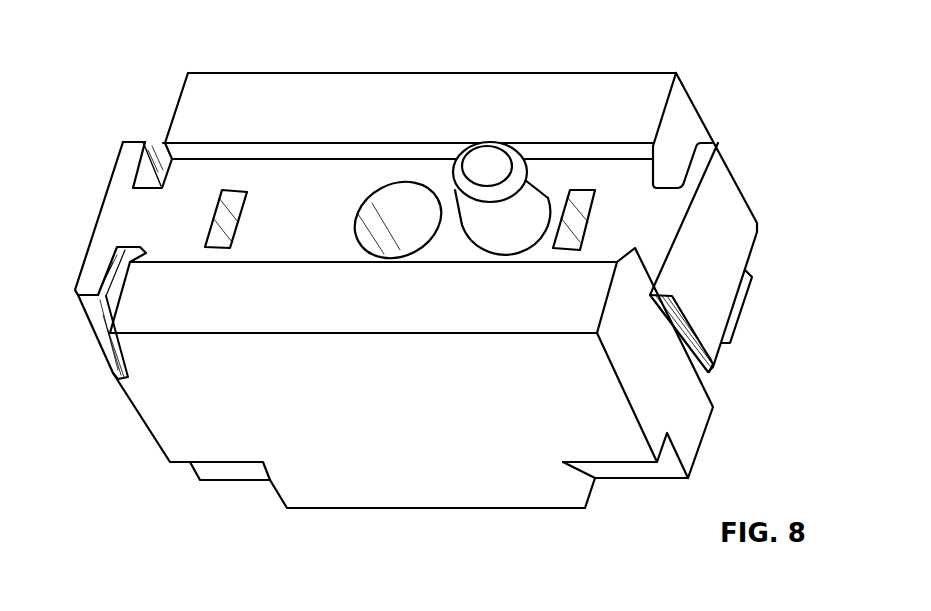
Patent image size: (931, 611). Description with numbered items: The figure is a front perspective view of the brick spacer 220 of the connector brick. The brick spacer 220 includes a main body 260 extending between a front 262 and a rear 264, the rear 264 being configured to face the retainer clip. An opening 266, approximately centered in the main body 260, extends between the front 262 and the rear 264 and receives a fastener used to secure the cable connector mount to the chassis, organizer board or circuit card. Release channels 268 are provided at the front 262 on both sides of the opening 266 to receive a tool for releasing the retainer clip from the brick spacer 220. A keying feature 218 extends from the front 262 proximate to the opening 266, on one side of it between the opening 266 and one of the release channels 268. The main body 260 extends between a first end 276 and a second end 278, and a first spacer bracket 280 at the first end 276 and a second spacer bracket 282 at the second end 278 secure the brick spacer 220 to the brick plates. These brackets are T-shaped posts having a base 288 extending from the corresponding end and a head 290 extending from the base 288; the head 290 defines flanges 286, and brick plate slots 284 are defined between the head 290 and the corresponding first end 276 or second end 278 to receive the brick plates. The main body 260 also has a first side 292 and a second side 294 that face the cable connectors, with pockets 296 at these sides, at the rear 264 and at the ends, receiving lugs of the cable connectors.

The brick spacer 220 is at (426, 51).
The front 262 is at (315, 95).
The second side 294 is at (475, 72).
The second spacer bracket 282 is at (98, 217).
The flanges 286 is at (130, 157).
The brick plate slots 284 is at (157, 153).
The second end 278 is at (130, 388).
The main body 260 is at (168, 413).
The first side 292 is at (467, 472).
The rear 264 is at (372, 508).
The pockets 296 is at (625, 483).
The first end 276 is at (683, 420).
The first spacer bracket 280 is at (733, 240).
The head 290 is at (707, 155).
The base 288 is at (668, 188).
The release channels 268 is at (233, 192).
The opening 266 is at (407, 189).
The keying feature 218 is at (488, 160).